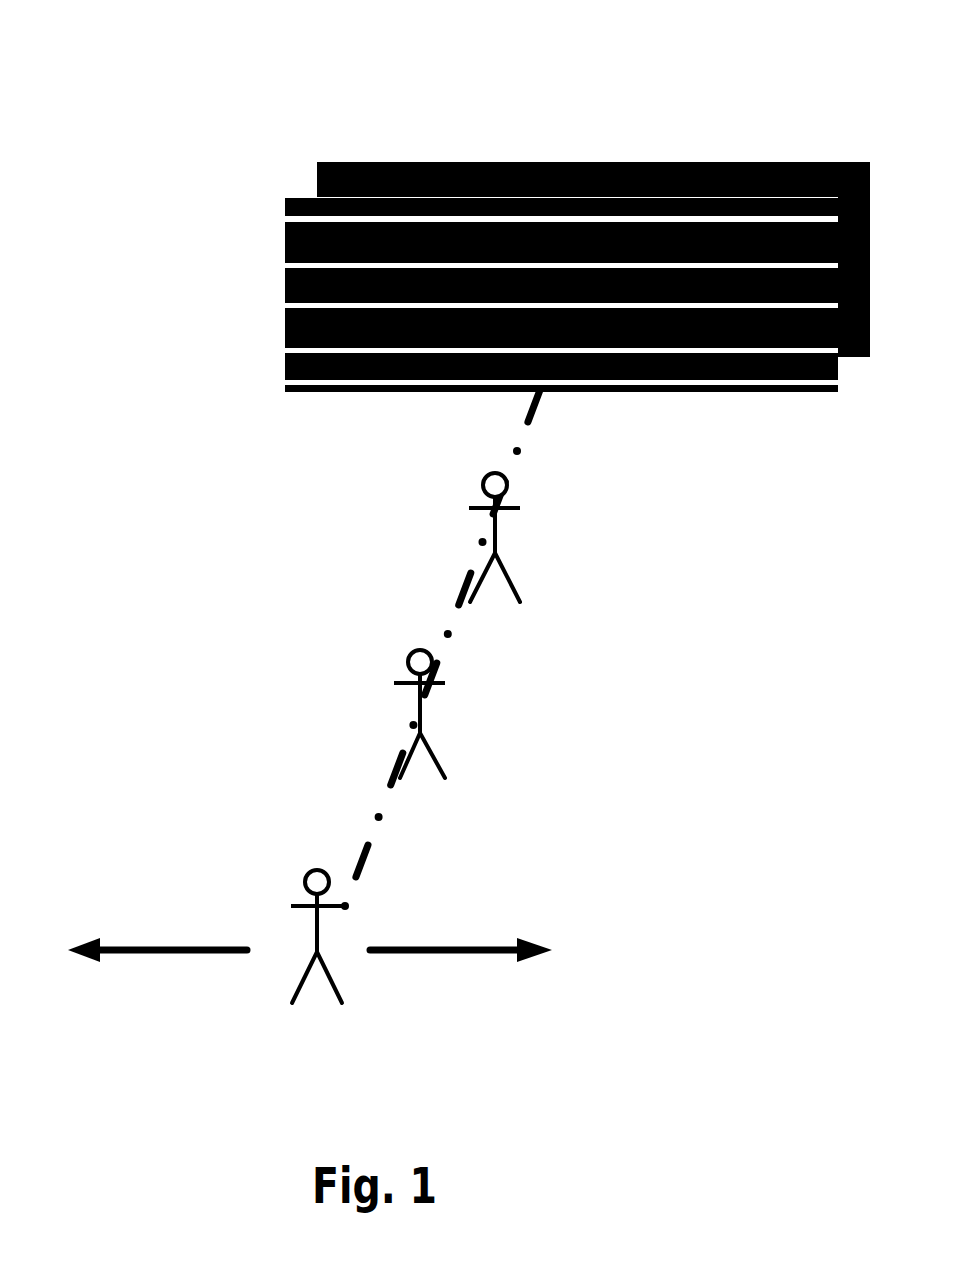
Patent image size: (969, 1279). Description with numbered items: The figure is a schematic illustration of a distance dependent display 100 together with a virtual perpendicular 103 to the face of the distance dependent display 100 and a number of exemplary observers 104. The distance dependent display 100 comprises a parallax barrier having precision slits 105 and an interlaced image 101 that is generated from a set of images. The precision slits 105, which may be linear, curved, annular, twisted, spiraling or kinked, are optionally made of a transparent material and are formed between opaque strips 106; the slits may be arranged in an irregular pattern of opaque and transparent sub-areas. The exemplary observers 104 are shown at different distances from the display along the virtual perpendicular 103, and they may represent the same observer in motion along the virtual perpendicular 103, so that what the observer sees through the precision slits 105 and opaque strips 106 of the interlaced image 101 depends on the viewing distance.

The distance dependent display 100 is at (323, 88).
The interlaced image 101 is at (289, 170).
The virtual perpendicular 103 is at (445, 597).
The exemplary observers 104 is at (360, 892).
The precision slits 105 is at (280, 238).
The opaque strips 106 is at (408, 980).